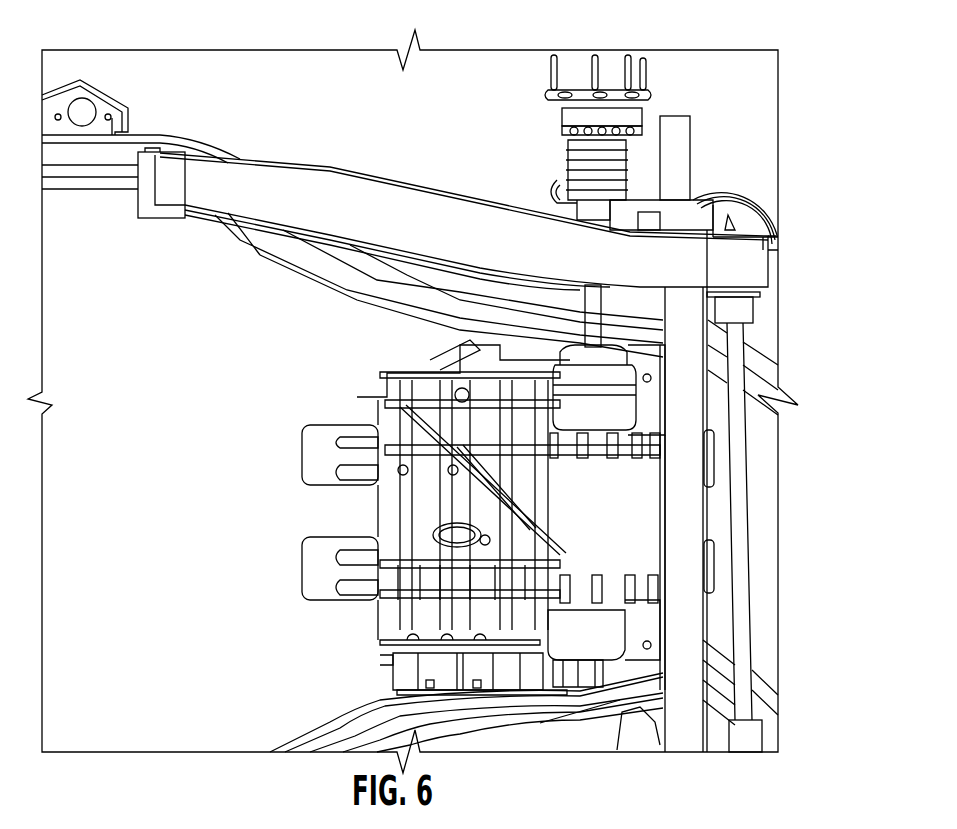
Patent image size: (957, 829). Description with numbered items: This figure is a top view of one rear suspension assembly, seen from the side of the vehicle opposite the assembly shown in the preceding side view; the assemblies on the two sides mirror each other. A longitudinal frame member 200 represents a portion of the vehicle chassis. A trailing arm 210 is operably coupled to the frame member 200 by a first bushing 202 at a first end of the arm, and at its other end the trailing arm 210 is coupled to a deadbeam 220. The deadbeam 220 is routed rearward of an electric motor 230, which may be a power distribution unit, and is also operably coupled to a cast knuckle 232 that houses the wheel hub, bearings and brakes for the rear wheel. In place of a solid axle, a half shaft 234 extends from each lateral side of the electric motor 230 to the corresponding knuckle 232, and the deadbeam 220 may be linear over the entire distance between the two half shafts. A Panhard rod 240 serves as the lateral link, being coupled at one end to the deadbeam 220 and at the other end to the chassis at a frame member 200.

The longitudinal frame member 200 is at (352, 263).
The first bushing 202 is at (140, 224).
The trailing arm 210 is at (282, 178).
The deadbeam 220 is at (682, 490).
The electric motor 230 is at (405, 497).
The cast knuckle 232 is at (598, 120).
The half shaft 234 is at (596, 300).
The Panhard rod 240 is at (748, 665).